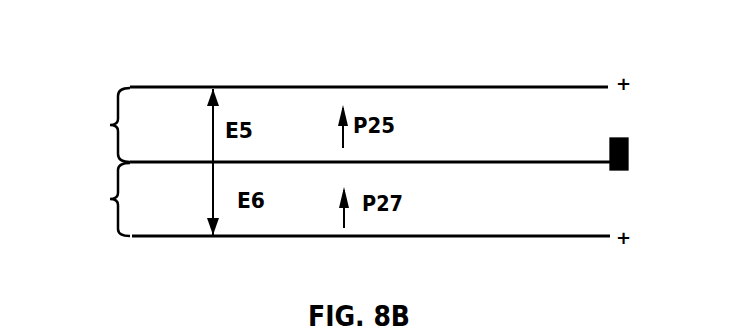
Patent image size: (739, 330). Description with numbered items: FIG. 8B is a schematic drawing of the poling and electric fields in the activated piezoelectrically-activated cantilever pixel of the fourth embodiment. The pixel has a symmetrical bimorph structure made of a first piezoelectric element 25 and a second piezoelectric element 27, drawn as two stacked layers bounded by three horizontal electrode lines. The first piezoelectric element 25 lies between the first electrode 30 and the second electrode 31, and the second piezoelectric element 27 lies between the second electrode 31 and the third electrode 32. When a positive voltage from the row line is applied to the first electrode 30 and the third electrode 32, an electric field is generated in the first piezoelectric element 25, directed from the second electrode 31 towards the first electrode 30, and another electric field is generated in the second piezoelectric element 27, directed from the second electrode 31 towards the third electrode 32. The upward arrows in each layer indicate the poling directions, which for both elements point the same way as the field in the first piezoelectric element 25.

The first piezoelectric element 25 is at (100, 125).
The second piezoelectric element 27 is at (100, 199).
The first electrode 30 is at (518, 87).
The second electrode 31 is at (580, 162).
The third electrode 32 is at (525, 236).